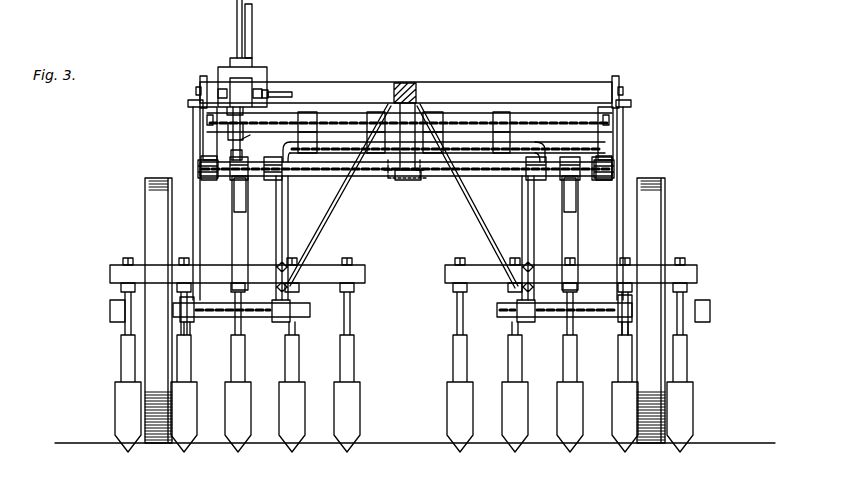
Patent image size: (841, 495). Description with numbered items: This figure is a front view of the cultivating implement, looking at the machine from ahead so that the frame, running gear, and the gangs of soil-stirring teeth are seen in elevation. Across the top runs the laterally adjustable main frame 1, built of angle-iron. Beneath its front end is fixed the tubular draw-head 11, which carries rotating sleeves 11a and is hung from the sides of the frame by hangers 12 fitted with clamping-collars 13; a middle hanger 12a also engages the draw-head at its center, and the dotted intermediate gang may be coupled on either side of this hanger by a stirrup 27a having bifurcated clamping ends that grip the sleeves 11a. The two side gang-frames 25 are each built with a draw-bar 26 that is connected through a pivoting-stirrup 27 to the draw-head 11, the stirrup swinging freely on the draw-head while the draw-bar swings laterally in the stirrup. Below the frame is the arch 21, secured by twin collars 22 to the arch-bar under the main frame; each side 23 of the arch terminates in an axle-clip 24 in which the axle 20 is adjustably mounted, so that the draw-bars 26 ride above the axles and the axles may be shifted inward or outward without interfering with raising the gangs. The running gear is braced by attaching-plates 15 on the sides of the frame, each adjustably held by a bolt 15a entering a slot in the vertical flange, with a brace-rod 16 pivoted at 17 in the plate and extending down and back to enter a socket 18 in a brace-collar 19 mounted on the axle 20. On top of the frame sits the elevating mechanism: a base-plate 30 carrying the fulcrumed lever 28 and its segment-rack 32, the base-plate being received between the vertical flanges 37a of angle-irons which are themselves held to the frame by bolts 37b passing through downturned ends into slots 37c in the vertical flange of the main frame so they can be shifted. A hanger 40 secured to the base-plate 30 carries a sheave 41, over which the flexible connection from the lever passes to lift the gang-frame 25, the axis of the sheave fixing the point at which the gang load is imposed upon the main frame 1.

The main frame 1 is at (548, 93).
The draw-head 11 is at (354, 173).
The sleeve 11a is at (212, 158).
The hanger 12 is at (208, 127).
The hanger 12a is at (407, 120).
The clamping-collar 13 is at (225, 163).
The attaching-plate 15 is at (200, 87).
The bolt 15a is at (197, 91).
The brace-rod 16 is at (195, 210).
The pivot 17 is at (190, 104).
The socket 18 is at (194, 301).
The brace-collar 19 is at (223, 320).
The axle 20 is at (402, 322).
The arch 21 is at (469, 153).
The twin collar 22 is at (313, 132).
The side of the arch 23 is at (283, 222).
The axle-clip 24 is at (278, 318).
The gang-frame 25 is at (323, 272).
The draw-bar 26 is at (243, 230).
The pivoting-stirrup 27 is at (252, 175).
The stirrup 27a is at (412, 180).
The lever 28 is at (237, 10).
The base-plate 30 is at (253, 77).
The segment-rack 32 is at (253, 14).
The vertical flange / downturned end of angle-iron 37a is at (222, 86).
The bolt 37b is at (268, 95).
The slot 37c is at (292, 94).
The hanger 40 is at (247, 133).
The sheave 41 is at (245, 137).